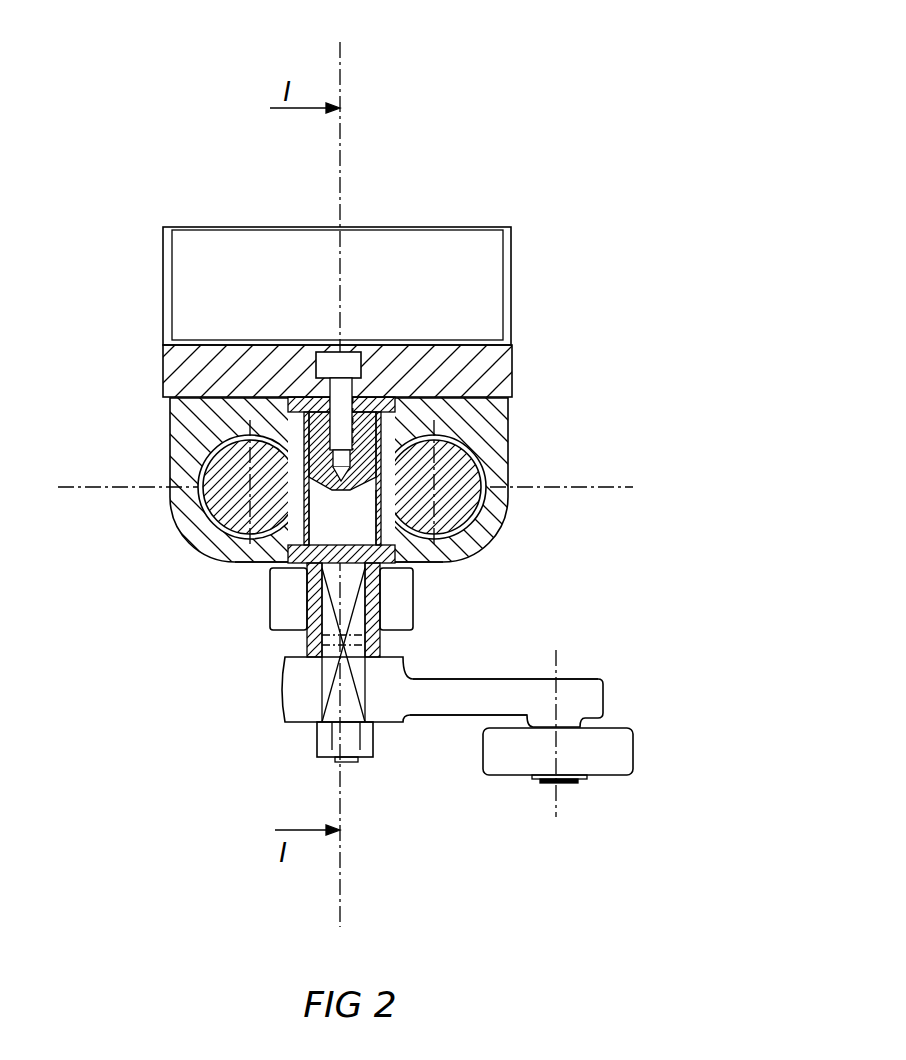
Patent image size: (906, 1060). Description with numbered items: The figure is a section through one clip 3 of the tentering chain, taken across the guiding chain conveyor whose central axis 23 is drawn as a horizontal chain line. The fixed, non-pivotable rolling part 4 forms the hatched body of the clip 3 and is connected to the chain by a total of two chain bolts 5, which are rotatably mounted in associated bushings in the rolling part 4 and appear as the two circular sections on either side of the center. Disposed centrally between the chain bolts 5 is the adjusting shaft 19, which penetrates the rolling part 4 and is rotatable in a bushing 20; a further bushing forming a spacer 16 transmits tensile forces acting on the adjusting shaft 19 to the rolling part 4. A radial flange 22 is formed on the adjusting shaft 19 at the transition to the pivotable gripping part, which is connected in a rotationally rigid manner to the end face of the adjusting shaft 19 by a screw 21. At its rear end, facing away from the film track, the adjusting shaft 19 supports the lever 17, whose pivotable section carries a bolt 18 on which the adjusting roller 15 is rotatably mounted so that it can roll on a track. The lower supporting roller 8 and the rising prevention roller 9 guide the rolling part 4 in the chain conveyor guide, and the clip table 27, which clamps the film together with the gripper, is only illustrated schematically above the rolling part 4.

The clip 3 is at (375, 204).
The rolling part 4 is at (173, 437).
The chain bolts 5 is at (217, 533).
The lower supporting roller 8 is at (402, 583).
The rising prevention roller 9 is at (341, 599).
The adjusting roller 15 is at (512, 760).
The spacer 16 is at (392, 642).
The lever 17 is at (443, 702).
The bolt 18 is at (548, 787).
The adjusting shaft 19 is at (365, 400).
The bushing 20 is at (252, 565).
The screw 21 is at (347, 363).
The radial flange 22 is at (398, 413).
The central axis 23 is at (103, 488).
The clip table 27 is at (472, 248).